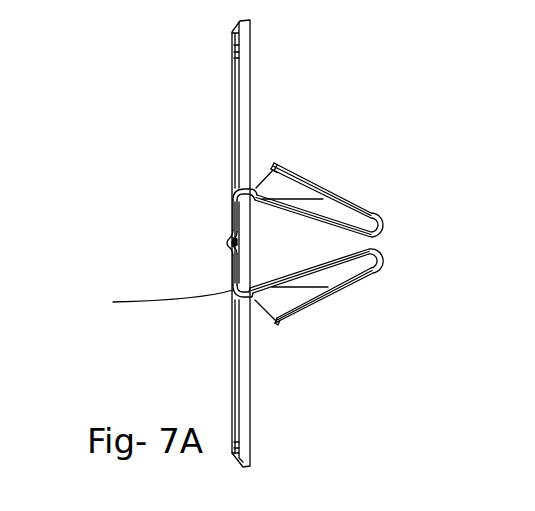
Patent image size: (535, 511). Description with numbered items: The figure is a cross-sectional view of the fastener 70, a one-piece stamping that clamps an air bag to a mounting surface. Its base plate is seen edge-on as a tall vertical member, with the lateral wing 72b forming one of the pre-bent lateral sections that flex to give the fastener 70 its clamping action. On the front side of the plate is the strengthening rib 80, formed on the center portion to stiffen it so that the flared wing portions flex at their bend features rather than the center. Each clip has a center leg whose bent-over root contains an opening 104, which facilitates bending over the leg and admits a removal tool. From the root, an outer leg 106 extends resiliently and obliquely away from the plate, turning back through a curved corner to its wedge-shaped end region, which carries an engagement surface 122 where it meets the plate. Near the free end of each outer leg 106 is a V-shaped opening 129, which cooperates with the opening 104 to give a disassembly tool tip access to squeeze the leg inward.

The fastener 70 is at (232, 112).
The lateral wing 72b is at (243, 92).
The opening 104 is at (233, 201).
The strengthening rib 80 is at (227, 247).
The engagement surface 122 is at (254, 186).
The outer leg 106 is at (353, 203).
The V-shaped opening 129 is at (278, 163).